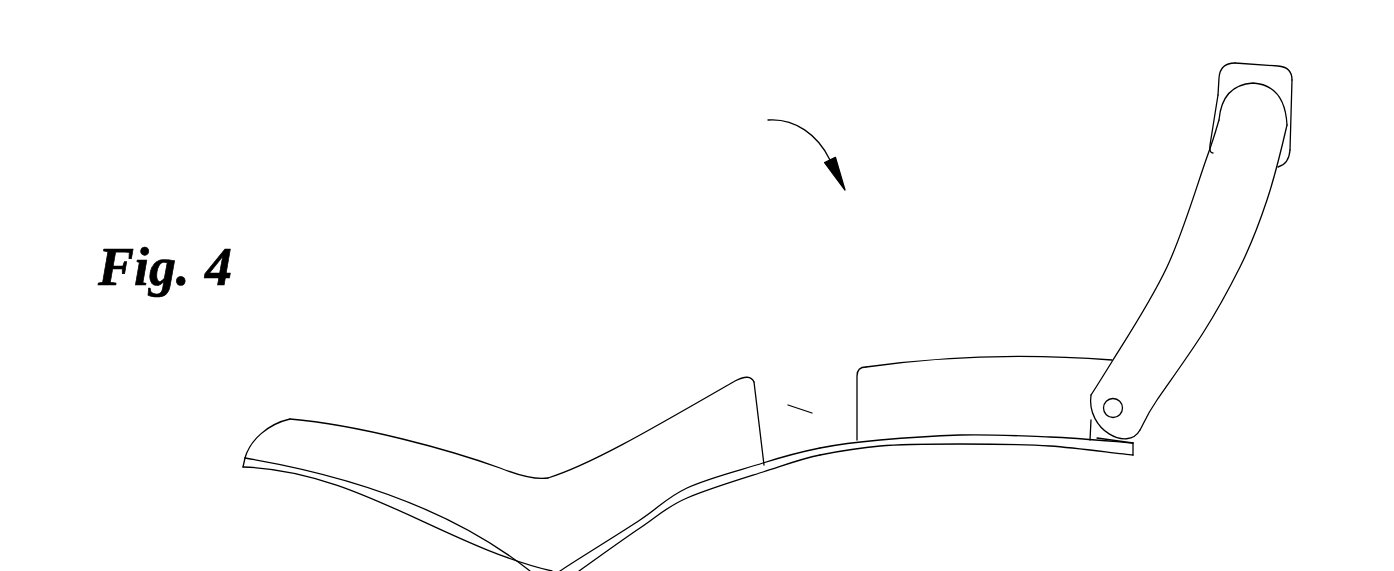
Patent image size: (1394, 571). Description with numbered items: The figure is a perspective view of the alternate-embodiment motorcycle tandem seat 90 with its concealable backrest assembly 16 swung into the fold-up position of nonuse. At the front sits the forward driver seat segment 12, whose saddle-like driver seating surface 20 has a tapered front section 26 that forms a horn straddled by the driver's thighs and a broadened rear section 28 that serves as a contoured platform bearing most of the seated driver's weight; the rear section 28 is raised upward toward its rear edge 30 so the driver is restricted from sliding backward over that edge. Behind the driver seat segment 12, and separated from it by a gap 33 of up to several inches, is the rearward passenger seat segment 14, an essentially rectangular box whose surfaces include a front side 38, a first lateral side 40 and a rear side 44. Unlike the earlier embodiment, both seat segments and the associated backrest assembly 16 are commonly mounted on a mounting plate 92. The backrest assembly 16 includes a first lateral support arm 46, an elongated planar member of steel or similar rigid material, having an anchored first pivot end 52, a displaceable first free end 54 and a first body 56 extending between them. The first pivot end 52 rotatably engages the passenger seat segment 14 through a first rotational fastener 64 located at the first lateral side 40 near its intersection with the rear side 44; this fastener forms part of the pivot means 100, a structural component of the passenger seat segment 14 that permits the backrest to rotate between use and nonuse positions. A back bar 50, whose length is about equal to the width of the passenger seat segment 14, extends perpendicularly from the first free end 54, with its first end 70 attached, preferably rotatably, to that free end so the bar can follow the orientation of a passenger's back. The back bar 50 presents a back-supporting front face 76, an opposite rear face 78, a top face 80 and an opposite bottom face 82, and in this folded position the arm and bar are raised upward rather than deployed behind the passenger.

The forward driver seat segment 12 is at (472, 426).
The rearward passenger seat segment 14 is at (968, 339).
The concealable backrest assembly 16 is at (1207, 279).
The driver seating surface 20 is at (497, 467).
The tapered front section 26 is at (290, 419).
The broadened rear section 28 is at (643, 428).
The rear edge 30 is at (749, 369).
The gap 33 is at (800, 410).
The front side 38 is at (853, 400).
The first lateral side 40 is at (1005, 421).
The rear side 44 is at (1138, 432).
The first lateral support arm 46 is at (1188, 334).
The back bar 50 is at (1250, 119).
The first pivot end 52 is at (1143, 406).
The first free end 54 is at (1257, 110).
The first body 56 is at (1228, 250).
The first rotational fastener 64 is at (1120, 412).
The first end 70 is at (1215, 92).
The back-supporting front face 76 is at (1208, 147).
The rear face 78 is at (1290, 143).
The top face 80 is at (1270, 65).
The bottom face 82 is at (1273, 170).
The tandem seat 90 is at (788, 147).
The mounting plate 92 is at (846, 496).
The pivot means 100 is at (1103, 447).